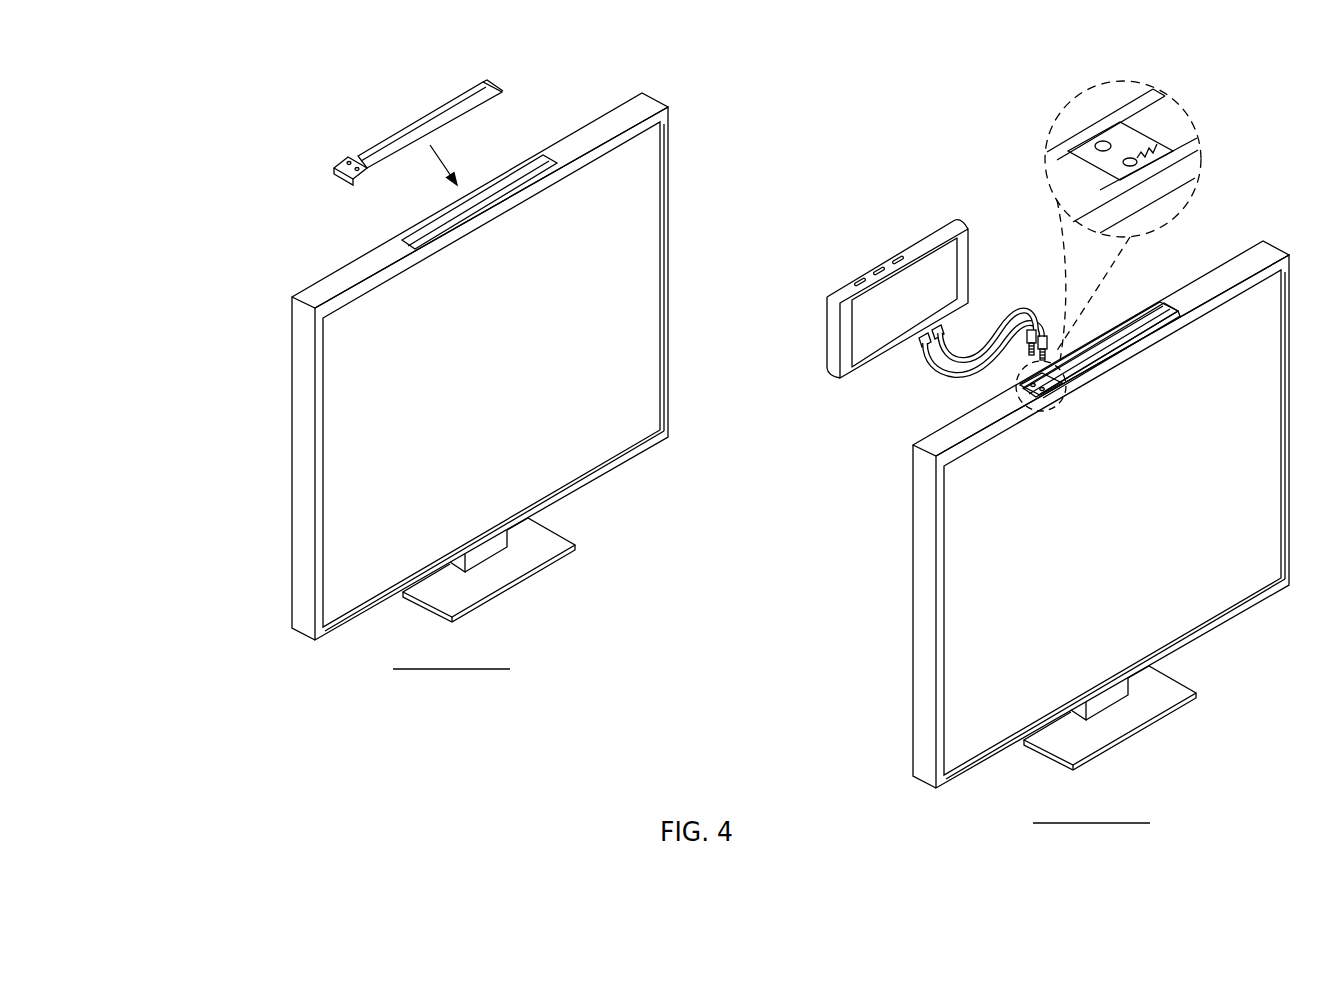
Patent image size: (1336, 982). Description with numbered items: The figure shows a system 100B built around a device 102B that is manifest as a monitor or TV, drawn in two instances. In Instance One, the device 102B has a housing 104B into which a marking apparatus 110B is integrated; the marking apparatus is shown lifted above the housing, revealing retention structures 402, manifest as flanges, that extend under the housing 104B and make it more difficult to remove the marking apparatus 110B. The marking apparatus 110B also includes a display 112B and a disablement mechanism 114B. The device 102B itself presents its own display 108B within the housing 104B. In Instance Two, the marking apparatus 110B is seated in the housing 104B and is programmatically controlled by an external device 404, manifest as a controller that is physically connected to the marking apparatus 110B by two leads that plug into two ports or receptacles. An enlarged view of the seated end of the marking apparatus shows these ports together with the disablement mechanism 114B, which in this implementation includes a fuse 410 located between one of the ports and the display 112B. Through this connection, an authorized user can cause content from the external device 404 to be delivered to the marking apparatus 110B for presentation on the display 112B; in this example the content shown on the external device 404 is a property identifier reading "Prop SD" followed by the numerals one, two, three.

The system 100B is at (805, 81).
The device 102B is at (391, 366).
The housing 104B is at (292, 299).
The display 108B is at (322, 345).
The marking apparatus 110B is at (647, 237).
The display 112B is at (372, 147).
The disablement mechanism 114B is at (354, 180).
The retention structure 402 is at (639, 258).
The external device 404 is at (931, 231).
The fuse 410 is at (1148, 148).